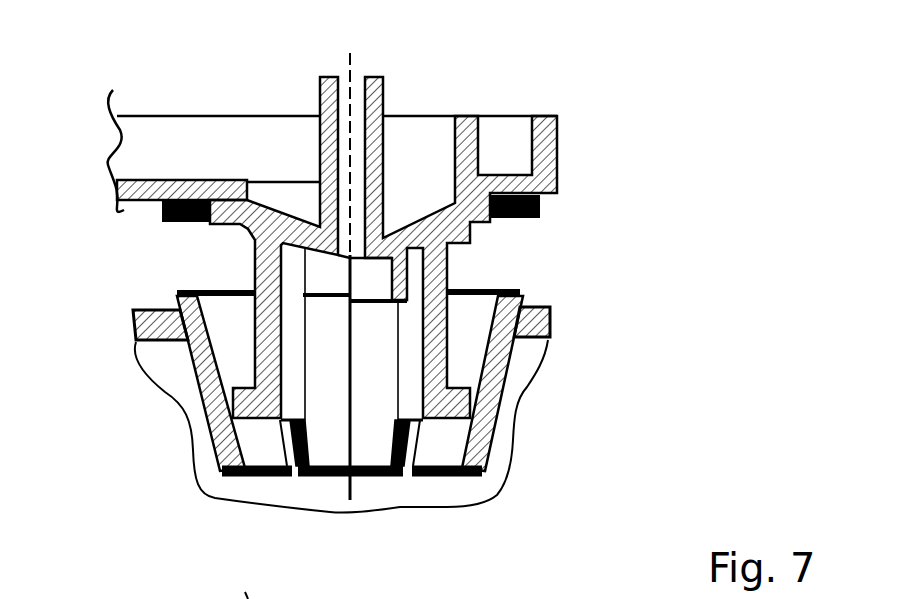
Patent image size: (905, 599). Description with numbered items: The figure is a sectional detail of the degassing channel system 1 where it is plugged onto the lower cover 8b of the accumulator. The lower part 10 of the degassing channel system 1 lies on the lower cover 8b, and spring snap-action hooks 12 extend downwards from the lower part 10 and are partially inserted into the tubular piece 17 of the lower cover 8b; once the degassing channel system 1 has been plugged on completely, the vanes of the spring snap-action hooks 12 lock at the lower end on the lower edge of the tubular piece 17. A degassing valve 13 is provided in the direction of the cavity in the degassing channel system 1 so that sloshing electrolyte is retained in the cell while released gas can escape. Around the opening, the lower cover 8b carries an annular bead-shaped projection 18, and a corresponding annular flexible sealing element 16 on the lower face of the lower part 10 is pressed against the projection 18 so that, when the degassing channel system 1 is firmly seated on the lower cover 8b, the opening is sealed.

The degassing channel system 1 is at (248, 70).
The lower part 10 is at (146, 180).
The degassing valve 13 is at (413, 310).
The annular flexible sealing element 16 is at (162, 222).
The projection 18 is at (175, 292).
The tubular piece 17 is at (218, 448).
The lower cover 8b is at (548, 343).
The spring snap-action hook 12 is at (424, 384).